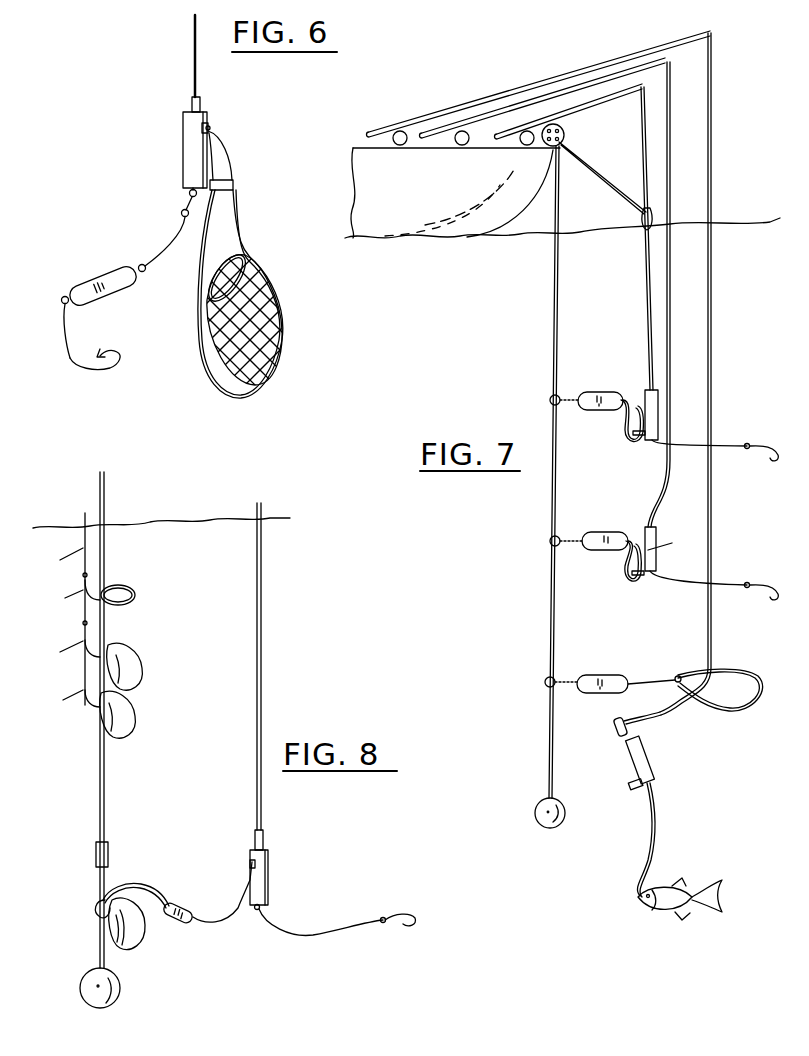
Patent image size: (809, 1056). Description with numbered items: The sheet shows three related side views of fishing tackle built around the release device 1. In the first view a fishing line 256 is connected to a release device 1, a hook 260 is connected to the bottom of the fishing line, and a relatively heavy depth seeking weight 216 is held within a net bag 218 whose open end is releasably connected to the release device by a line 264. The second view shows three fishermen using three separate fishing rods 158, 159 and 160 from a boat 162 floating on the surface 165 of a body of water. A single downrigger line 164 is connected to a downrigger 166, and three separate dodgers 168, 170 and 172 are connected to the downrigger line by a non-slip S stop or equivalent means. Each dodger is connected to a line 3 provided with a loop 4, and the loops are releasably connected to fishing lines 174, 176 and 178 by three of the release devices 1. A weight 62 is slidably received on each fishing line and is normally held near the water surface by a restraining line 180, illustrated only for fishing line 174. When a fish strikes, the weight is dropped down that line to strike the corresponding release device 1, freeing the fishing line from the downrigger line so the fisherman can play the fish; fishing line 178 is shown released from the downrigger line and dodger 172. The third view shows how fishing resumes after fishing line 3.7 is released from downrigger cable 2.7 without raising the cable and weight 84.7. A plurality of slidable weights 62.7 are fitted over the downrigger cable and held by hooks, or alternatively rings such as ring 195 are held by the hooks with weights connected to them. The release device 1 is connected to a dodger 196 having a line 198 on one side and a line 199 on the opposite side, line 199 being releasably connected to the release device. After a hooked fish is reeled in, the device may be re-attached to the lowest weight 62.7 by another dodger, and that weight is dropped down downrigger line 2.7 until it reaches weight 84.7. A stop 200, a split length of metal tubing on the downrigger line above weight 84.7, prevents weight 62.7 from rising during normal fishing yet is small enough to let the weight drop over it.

In FIG. 6, the release device 1 is at (193, 145).
In FIG. 7, the release device 1 is at (653, 412).
In FIG. 8, the release device 1 is at (267, 875).
In FIG. 7, the line 3 is at (633, 447).
In FIG. 7, the loop 4 is at (727, 671).
In FIG. 7, the weight 62 is at (650, 218).
In FIG. 7, the fishing rod 158 is at (487, 97).
In FIG. 7, the fishing rod 159 is at (533, 104).
In FIG. 7, the fishing rod 160 is at (603, 95).
In FIG. 7, the boat 162 is at (398, 234).
In FIG. 7, the downrigger line 164 is at (562, 272).
In FIG. 7, the surface 165 is at (527, 226).
In FIG. 7, the downrigger 166 is at (563, 142).
In FIG. 7, the dodger 168 is at (598, 404).
In FIG. 7, the dodger 170 is at (593, 548).
In FIG. 7, the dodger 172 is at (592, 680).
In FIG. 7, the fishing line 174 is at (647, 302).
In FIG. 7, the fishing line 176 is at (670, 334).
In FIG. 7, the fishing line 178 is at (712, 282).
In FIG. 7, the restraining line 180 is at (593, 187).
In FIG. 8, the ring 195 is at (137, 592).
In FIG. 8, the dodger 196 is at (188, 907).
In FIG. 8, the line 198 is at (140, 892).
In FIG. 8, the line 199 is at (217, 922).
In FIG. 8, the stop 200 is at (108, 850).
In FIG. 6, the weight 216 is at (253, 365).
In FIG. 6, the net bag 218 is at (270, 300).
In FIG. 6, the fishing line 256 is at (194, 72).
In FIG. 6, the hook 260 is at (120, 367).
In FIG. 6, the line 264 is at (238, 208).
In FIG. 8, the downrigger cable 2.7 is at (105, 778).
In FIG. 8, the fishing line 3.7 is at (262, 620).
In FIG. 8, the slidable weight 62.7 is at (123, 662).
In FIG. 8, the weight 84.7 is at (114, 987).